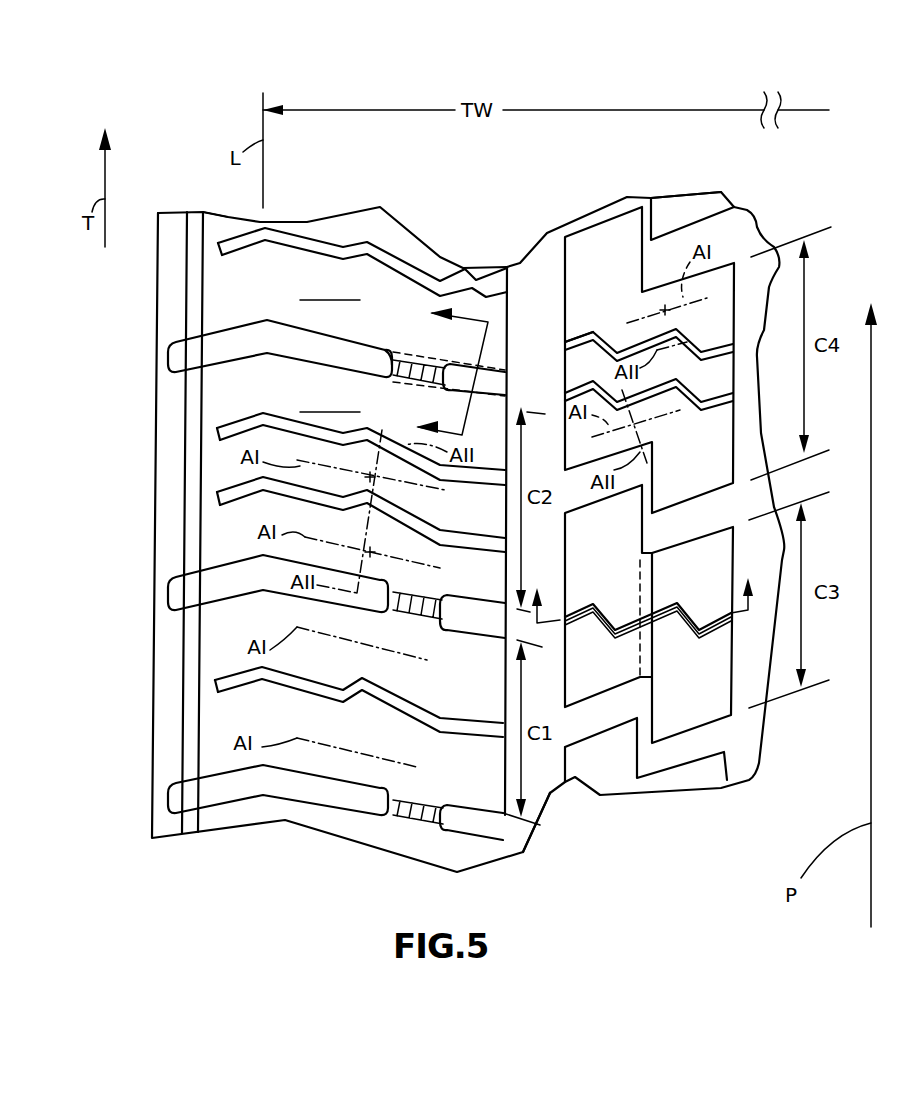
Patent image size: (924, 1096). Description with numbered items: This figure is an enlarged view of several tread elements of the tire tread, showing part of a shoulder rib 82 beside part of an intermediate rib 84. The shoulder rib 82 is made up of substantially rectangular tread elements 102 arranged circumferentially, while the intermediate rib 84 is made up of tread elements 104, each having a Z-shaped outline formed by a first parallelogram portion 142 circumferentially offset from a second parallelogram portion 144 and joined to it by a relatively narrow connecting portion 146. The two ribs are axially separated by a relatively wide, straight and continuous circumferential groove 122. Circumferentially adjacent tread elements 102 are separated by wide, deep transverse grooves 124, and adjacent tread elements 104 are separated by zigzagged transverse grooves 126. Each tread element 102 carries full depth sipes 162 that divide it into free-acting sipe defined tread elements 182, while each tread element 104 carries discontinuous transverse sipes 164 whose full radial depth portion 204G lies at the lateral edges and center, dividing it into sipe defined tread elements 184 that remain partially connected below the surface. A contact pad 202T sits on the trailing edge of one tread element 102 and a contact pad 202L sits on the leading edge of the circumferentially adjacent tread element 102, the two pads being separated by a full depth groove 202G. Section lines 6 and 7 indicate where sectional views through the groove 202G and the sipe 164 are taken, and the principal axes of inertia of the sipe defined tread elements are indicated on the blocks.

The shoulder rib 82 is at (352, 210).
The intermediate rib 84 is at (655, 188).
The tread element 102 is at (228, 398).
The tread element 104 is at (745, 290).
The circumferential groove 122 is at (537, 783).
The transverse groove 124 is at (172, 347).
The transverse groove 126 is at (687, 750).
The first parallelogram portion 142 is at (608, 596).
The second parallelogram portion 144 is at (692, 635).
The connecting portion 146 is at (644, 550).
The sipe 162 is at (397, 263).
The sipe 164 is at (733, 344).
The sipe defined tread element 182 is at (395, 526).
The sipe defined tread element 184 is at (711, 320).
The groove 202G is at (365, 346).
The contact pad 202T is at (405, 355).
The contact pad 202L is at (400, 378).
The full radial depth portion 204G is at (573, 333).
The section line 6- 6 is at (437, 365).
The section line 7- 7 is at (642, 586).